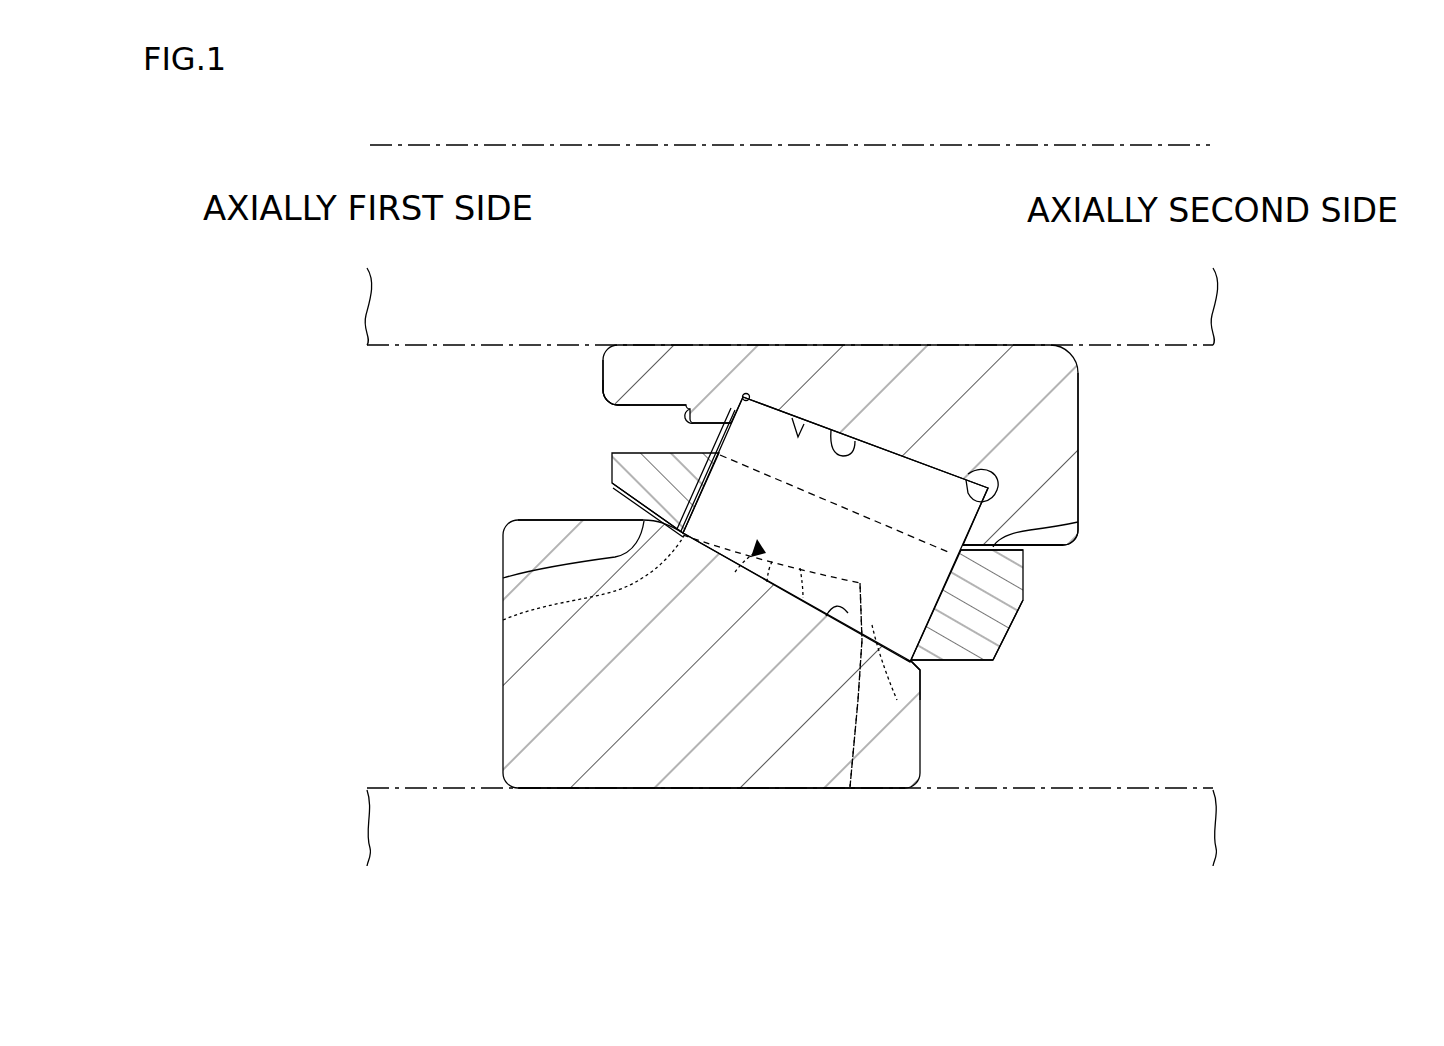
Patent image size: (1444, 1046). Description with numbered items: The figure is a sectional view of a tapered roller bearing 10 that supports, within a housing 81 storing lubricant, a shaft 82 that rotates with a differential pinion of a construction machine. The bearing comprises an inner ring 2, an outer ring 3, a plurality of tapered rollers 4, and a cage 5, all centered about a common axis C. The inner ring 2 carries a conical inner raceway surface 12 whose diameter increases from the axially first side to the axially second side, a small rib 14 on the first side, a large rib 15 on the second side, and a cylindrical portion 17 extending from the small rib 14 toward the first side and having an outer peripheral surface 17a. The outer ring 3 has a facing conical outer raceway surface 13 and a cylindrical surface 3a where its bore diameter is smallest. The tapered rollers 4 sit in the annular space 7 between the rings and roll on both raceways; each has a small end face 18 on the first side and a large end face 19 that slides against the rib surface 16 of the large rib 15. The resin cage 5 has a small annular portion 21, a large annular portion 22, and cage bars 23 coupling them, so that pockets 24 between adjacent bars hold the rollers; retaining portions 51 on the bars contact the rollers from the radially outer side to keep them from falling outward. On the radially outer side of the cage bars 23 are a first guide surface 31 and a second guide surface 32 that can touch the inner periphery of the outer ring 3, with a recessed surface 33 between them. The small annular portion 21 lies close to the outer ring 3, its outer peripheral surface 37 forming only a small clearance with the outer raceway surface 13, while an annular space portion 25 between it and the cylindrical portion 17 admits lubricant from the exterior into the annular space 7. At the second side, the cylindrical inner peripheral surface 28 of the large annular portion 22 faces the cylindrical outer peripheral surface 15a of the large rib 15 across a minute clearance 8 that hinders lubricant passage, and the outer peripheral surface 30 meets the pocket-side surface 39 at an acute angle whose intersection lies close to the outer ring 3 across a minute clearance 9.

The inner ring 2 is at (887, 345).
The outer ring 3 is at (733, 789).
The cylindrical surface 3a is at (553, 520).
The tapered roller 4 is at (927, 464).
The cage 5 is at (1013, 621).
The annular space 7 is at (797, 417).
The minute clearance 8 is at (1042, 550).
The minute clearance 9 is at (921, 675).
The tapered roller bearing 10 is at (869, 796).
The inner raceway surface 12 is at (835, 430).
The outer raceway surface 13 is at (838, 616).
The small rib 14 is at (713, 410).
The large rib 15 is at (1045, 497).
The outer peripheral surface of the large rib 15a is at (1013, 549).
The rib surface 16 is at (985, 476).
The cylindrical portion 17 is at (623, 365).
The outer peripheral surface of the inner ring 17a is at (605, 410).
The small end face 18 is at (675, 484).
The large end face 19 is at (958, 572).
The small annular portion 21 is at (651, 462).
The large annular portion 22 is at (963, 662).
The cage bar 23 is at (767, 582).
The pocket 24 is at (735, 572).
The space portion 25 is at (626, 431).
The inner peripheral surface of the large annular portion 28 is at (1078, 522).
The outer peripheral surface of the large annular portion 30 is at (929, 670).
The first guide surface 31 is at (503, 620).
The second guide surface 32 is at (897, 700).
The recessed surface 33 is at (803, 598).
The outer peripheral surface of the small annular portion 37 is at (503, 578).
The pocket-side surface 39 is at (975, 644).
The retaining portion 51 is at (850, 787).
The housing 81 is at (1167, 788).
The shaft 82 is at (1167, 348).
The axis C is at (1070, 143).